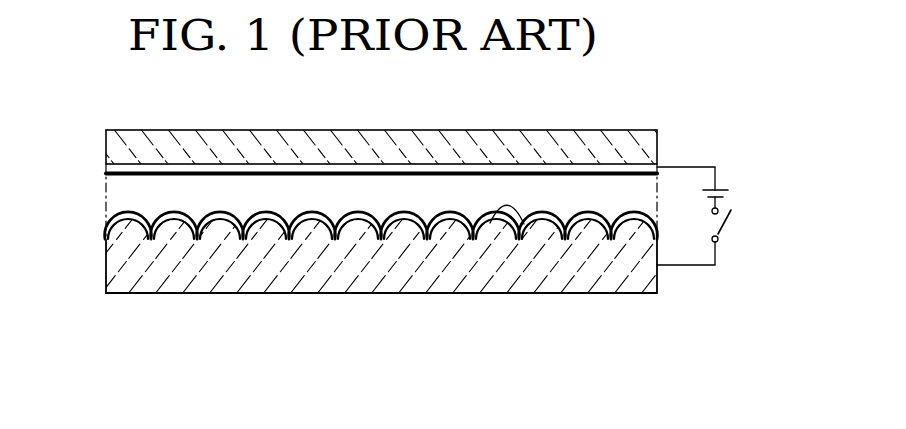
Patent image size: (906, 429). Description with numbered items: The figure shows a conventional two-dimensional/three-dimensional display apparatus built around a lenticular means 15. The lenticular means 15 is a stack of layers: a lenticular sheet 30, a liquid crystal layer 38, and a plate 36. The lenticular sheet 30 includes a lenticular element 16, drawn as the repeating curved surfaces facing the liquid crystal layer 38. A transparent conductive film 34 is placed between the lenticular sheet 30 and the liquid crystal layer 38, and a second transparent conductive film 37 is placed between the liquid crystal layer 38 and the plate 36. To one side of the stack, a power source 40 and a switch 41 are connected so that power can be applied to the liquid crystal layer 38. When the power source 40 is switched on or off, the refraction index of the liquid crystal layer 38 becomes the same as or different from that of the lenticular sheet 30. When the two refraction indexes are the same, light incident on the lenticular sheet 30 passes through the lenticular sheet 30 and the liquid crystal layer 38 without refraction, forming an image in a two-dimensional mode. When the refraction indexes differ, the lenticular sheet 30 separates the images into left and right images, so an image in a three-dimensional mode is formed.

The lenticular means 15 is at (390, 252).
The lenticular element 16 is at (265, 228).
The lenticular sheet 30 is at (316, 283).
The transparent conductive film 34 is at (524, 224).
The plate 36 is at (106, 150).
The transparent conductive film 37 is at (106, 173).
The liquid crystal layer 38 is at (106, 200).
The power source 40 is at (729, 191).
The switch 41 is at (725, 230).